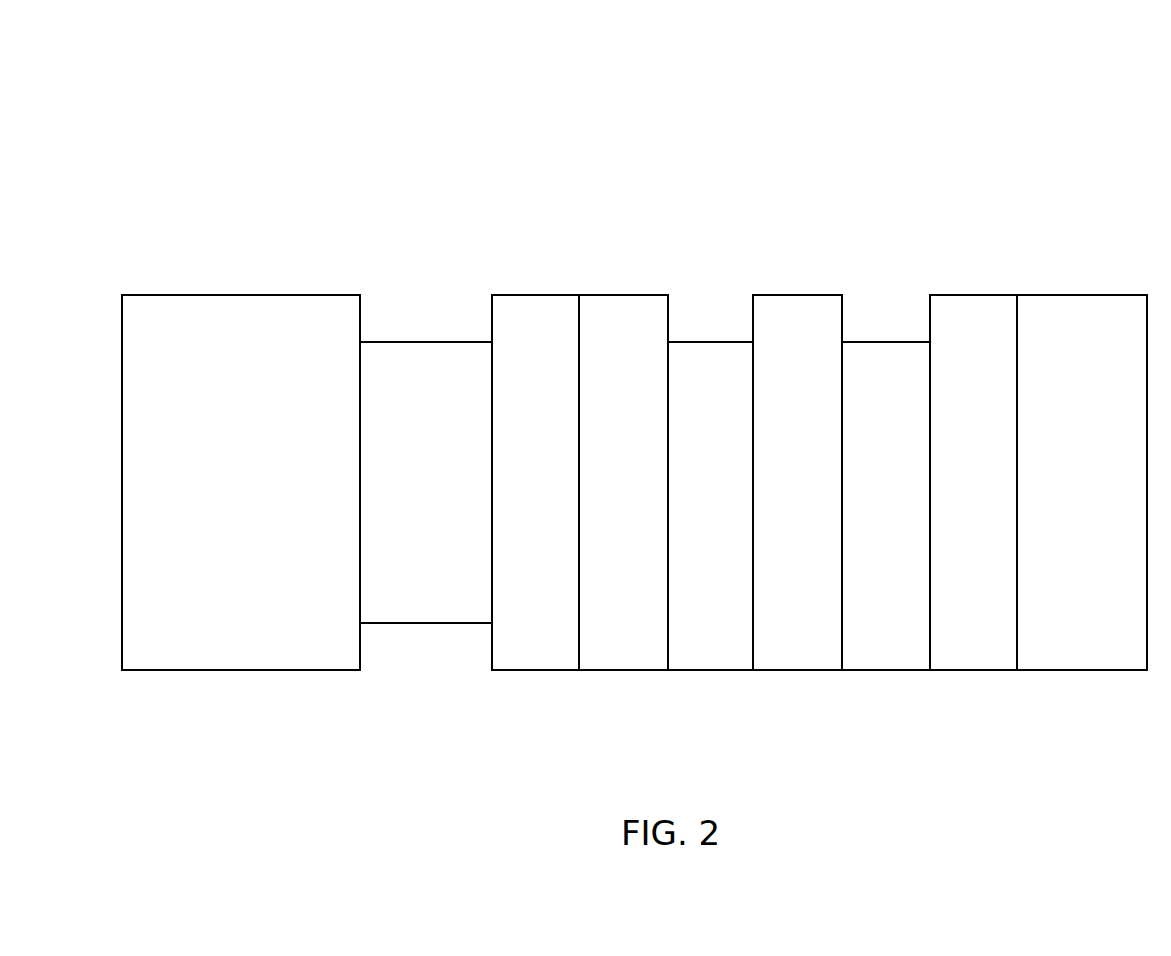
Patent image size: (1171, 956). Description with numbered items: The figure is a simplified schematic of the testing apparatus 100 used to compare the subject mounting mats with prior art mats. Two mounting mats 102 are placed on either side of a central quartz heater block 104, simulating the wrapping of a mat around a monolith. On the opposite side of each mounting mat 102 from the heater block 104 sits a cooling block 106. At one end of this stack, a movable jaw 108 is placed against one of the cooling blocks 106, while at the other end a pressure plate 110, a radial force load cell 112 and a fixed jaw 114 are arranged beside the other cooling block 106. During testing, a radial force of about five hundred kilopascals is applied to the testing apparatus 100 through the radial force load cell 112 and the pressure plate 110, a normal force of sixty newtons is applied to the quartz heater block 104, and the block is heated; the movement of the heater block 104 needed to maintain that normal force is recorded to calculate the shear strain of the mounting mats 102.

The testing apparatus 100 is at (659, 108).
The mounting mats 102 is at (700, 670).
The quartz heater block 104 is at (833, 313).
The cooling blocks 106 is at (602, 667).
The movable jaw 108 is at (1080, 323).
The pressure plate 110 is at (526, 318).
The radial force load cell 112 is at (414, 341).
The fixed jaw 114 is at (212, 643).